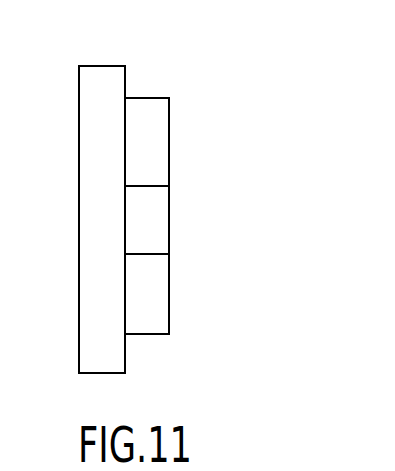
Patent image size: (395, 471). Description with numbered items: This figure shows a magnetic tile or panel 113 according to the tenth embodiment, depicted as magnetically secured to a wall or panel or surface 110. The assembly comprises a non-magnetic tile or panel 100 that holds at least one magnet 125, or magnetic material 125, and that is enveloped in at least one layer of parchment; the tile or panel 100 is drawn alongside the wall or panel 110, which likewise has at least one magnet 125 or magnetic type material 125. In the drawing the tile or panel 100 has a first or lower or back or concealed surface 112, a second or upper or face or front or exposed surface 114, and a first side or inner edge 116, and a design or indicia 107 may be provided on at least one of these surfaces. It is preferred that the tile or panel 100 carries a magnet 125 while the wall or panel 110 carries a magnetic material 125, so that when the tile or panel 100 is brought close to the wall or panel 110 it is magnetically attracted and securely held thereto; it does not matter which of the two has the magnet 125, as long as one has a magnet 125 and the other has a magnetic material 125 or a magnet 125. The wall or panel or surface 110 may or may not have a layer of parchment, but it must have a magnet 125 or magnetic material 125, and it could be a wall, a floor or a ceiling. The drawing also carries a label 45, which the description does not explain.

The wall or panel or surface 110 is at (93, 80).
The magnetic tile or panel 113 is at (163, 45).
The second or upper or face or front or exposed or exterior surface 114 is at (125, 82).
The non-magnetic tile or panel 100 is at (160, 142).
The design or indicia 107 is at (168, 158).
The first or side or inner edge 116 is at (140, 190).
The element 45 is at (168, 240).
The magnet or magnetic material 125 is at (137, 128).
The first or lower or bottom or back or concealed or interior surface 112 is at (124, 227).